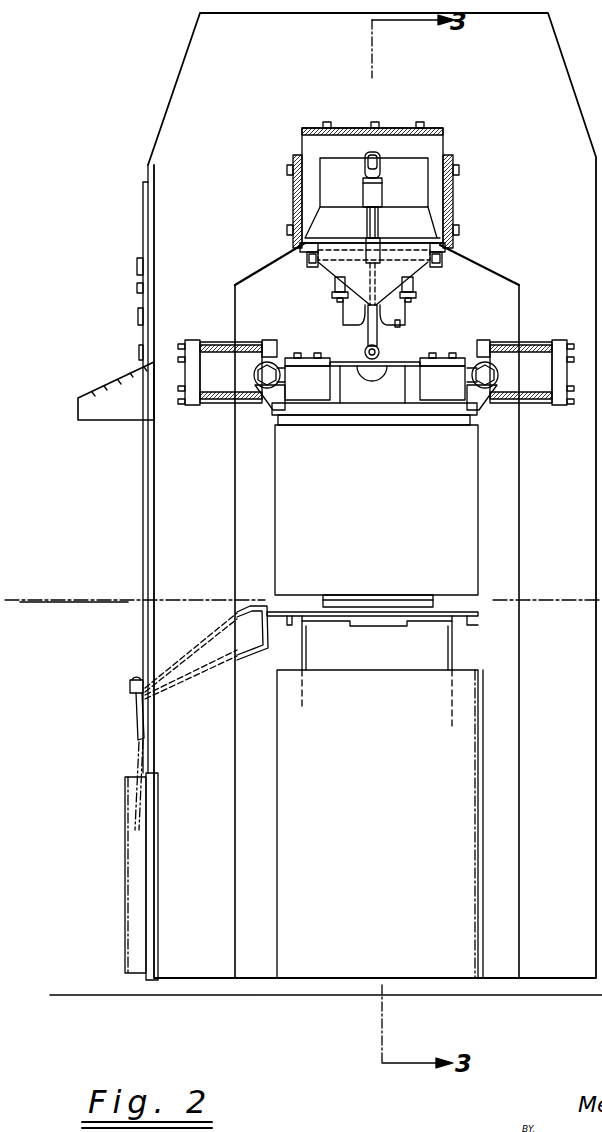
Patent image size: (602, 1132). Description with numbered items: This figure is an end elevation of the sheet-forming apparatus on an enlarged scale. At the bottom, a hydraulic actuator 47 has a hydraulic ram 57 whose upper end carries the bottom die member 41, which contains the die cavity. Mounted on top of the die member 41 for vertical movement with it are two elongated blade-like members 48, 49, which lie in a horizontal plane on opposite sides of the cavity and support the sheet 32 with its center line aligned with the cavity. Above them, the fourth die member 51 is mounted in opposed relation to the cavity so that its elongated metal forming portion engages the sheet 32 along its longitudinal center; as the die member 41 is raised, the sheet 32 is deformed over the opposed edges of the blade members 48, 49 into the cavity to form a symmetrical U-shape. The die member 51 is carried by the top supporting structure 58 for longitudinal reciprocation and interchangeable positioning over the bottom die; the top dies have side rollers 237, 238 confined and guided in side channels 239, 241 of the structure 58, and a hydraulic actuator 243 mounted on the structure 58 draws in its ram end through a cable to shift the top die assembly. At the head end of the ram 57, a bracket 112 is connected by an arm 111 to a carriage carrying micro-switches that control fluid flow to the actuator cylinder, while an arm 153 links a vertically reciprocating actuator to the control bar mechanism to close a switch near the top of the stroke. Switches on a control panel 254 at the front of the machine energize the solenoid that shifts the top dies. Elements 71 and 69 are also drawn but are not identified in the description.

The top supporting structure 58 is at (445, 147).
The hydraulic actuator 243 is at (380, 166).
The side roller 237 is at (304, 251).
The side roller 238 is at (447, 251).
The side channel 239 is at (312, 268).
The side channel 241 is at (442, 263).
The fourth die member 51 is at (388, 351).
The sheet 32 is at (362, 363).
The blade-like member 48 is at (343, 370).
The blade-like member 49 is at (406, 370).
The die member 41 is at (373, 406).
The left cylinder 71 is at (215, 350).
The right cylinder 69 is at (527, 350).
The bracket 112 is at (252, 651).
The arm 111 is at (133, 700).
The arm 153 is at (143, 515).
The control panel 254 is at (88, 407).
The hydraulic ram 57 is at (447, 652).
The hydraulic actuator 47 is at (486, 752).